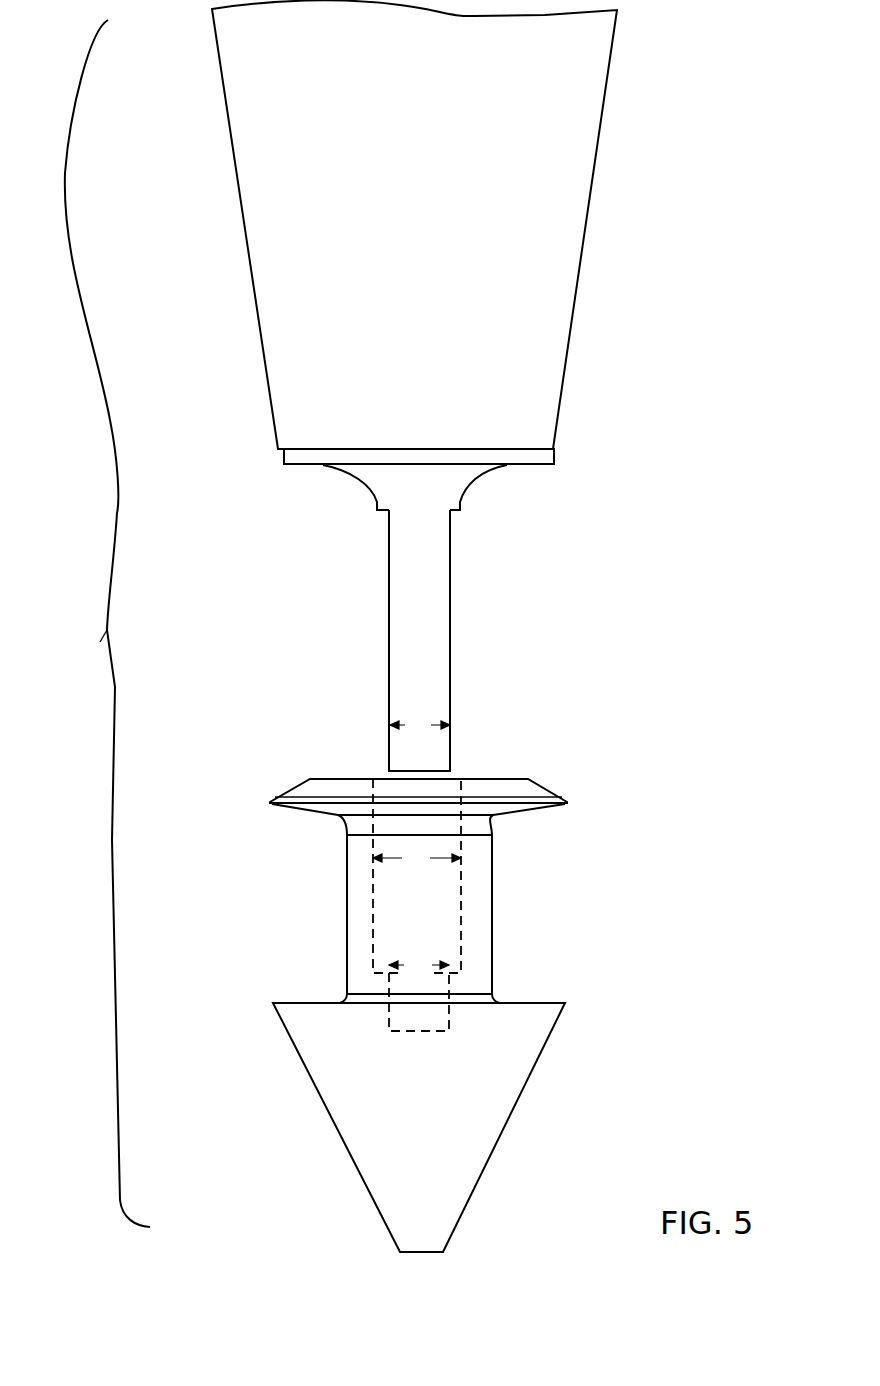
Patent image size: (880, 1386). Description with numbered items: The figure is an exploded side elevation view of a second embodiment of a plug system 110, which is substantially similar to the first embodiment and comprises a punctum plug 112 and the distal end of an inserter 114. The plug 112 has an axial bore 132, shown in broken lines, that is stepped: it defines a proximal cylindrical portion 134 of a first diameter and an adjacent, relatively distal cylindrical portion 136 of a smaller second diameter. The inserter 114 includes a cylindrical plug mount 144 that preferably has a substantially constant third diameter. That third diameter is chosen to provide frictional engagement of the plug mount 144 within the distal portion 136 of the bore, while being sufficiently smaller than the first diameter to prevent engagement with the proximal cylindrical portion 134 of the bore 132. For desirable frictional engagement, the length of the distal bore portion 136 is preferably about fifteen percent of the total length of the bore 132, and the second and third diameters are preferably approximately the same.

The plug system 110 is at (93, 623).
The plug 112 is at (238, 937).
The inserter 114 is at (185, 383).
The bore 132 is at (462, 928).
The proximal cylindrical portion 134 is at (437, 882).
The distal cylindrical portion 136 is at (430, 1017).
The plug mount 144 is at (451, 629).